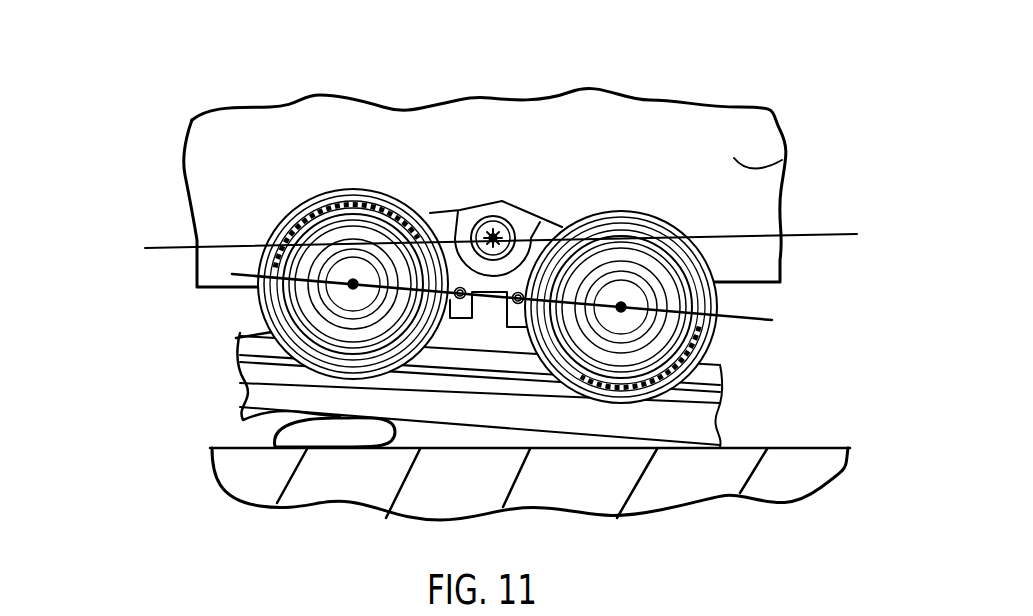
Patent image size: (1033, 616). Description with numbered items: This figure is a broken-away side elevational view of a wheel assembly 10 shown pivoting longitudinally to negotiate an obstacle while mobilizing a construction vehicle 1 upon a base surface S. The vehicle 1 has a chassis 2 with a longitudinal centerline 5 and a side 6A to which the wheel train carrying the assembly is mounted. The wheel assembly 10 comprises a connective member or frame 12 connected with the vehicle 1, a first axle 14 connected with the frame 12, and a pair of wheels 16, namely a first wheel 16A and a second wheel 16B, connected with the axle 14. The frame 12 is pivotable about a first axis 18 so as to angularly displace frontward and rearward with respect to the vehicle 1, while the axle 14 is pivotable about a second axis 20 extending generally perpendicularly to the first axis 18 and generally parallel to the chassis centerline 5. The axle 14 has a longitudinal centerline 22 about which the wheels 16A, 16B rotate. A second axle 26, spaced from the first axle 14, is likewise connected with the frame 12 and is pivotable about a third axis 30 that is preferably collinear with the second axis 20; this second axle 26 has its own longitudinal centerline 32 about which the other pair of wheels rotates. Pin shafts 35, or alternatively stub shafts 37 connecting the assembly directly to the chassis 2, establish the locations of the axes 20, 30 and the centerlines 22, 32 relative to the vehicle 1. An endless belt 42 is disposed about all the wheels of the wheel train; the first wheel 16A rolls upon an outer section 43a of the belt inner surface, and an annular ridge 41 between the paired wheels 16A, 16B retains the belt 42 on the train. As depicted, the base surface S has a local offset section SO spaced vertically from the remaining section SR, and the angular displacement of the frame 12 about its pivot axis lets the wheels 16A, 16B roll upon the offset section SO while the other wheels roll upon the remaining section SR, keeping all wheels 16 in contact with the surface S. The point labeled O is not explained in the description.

The construction vehicle 1 is at (333, 40).
The chassis 2 is at (490, 117).
The longitudinal centerline 5 is at (823, 234).
The side 6A is at (782, 160).
The wheel assembly 10 is at (138, 302).
The frame 12 is at (560, 221).
The axle 14 is at (345, 297).
The wheel 16 is at (230, 306).
The first wheel 16A is at (265, 321).
The second wheel 16B is at (702, 352).
The first axis 18 is at (503, 232).
The second axis 20 is at (250, 262).
The longitudinal centerline 22 is at (354, 290).
The second axle 26 is at (634, 298).
The third axis 30 is at (742, 320).
The longitudinal centerline 32 is at (623, 310).
The pin shaft 35 is at (493, 236).
The stub shaft 37 is at (493, 238).
The ridge 41 is at (510, 363).
The endless belt 42 is at (707, 422).
The outer section of belt inner surface 43a is at (470, 392).
The base surface S is at (530, 484).
The offset surface section SO is at (340, 412).
The remaining surface section SR is at (447, 447).
The contact point O is at (347, 441).